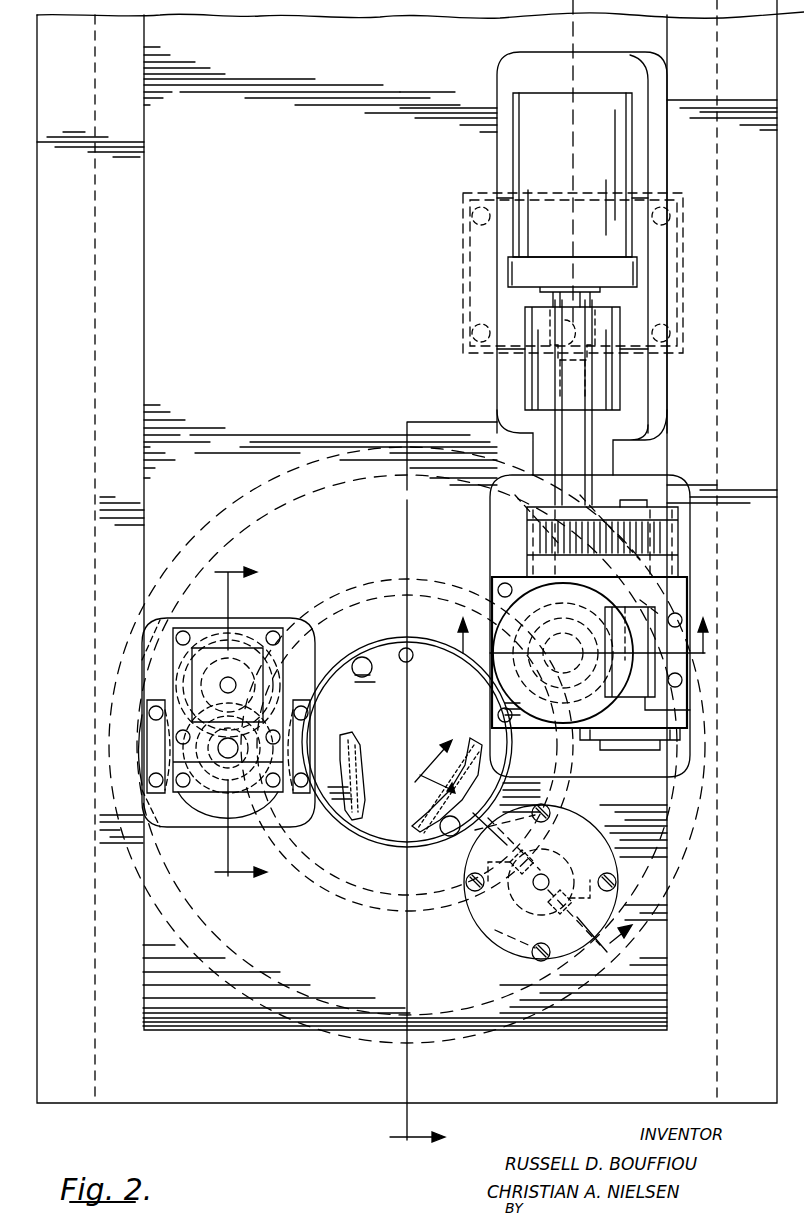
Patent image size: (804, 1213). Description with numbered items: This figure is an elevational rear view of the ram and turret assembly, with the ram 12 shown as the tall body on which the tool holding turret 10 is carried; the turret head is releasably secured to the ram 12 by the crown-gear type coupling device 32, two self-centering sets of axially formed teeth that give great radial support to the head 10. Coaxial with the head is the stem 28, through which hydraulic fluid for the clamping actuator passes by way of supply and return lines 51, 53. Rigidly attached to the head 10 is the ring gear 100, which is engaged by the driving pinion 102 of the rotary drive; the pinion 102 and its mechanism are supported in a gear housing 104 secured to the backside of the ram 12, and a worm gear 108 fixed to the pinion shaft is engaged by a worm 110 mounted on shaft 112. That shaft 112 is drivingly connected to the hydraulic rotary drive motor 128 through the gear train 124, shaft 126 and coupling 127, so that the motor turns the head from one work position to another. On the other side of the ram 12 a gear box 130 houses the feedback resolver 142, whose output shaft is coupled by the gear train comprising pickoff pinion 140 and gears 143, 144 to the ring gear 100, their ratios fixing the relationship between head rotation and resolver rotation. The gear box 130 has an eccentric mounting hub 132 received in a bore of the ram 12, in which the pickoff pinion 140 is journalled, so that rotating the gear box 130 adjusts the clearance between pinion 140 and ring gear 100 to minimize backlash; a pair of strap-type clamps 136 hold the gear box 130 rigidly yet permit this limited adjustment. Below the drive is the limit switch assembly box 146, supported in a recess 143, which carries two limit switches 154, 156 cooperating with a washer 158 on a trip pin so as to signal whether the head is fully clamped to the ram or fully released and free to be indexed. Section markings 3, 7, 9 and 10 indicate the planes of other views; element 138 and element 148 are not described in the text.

The ram 12 is at (190, 1092).
The section line 3- 3 is at (431, 784).
The coupling device 32 is at (357, 1046).
The ring gear 100 is at (372, 597).
The hydraulic rotary drive motor 128 is at (528, 143).
The coupling 127 is at (533, 367).
The shaft 126 is at (585, 462).
The gear train 124 is at (655, 497).
The shaft 112 is at (665, 580).
The driving pinion 102 is at (497, 600).
The gear housing 104 is at (505, 580).
The worm 110 is at (665, 612).
The worm gear 108 is at (624, 749).
The section line 7- 7 is at (583, 656).
The left housing 138 is at (142, 640).
The gear box 130 is at (175, 660).
The feedback resolver 142 is at (243, 608).
The gear 143 is at (283, 615).
The eccentric mounting hub 132 is at (240, 810).
The strap-type clamps 136 is at (147, 735).
The gear 144 is at (150, 775).
The pickoff pinion 140 is at (208, 830).
The section line 9- 9 is at (231, 730).
The stem 28 is at (352, 838).
The supply line 51 is at (357, 752).
The return line 53 is at (412, 838).
The tool holding turret 10 is at (512, 858).
The limit switch assembly box 146 is at (478, 935).
The limit switch 154 is at (545, 836).
The limit switch 156 is at (548, 920).
The washer 158 is at (472, 912).
The disc arm 148 is at (508, 948).